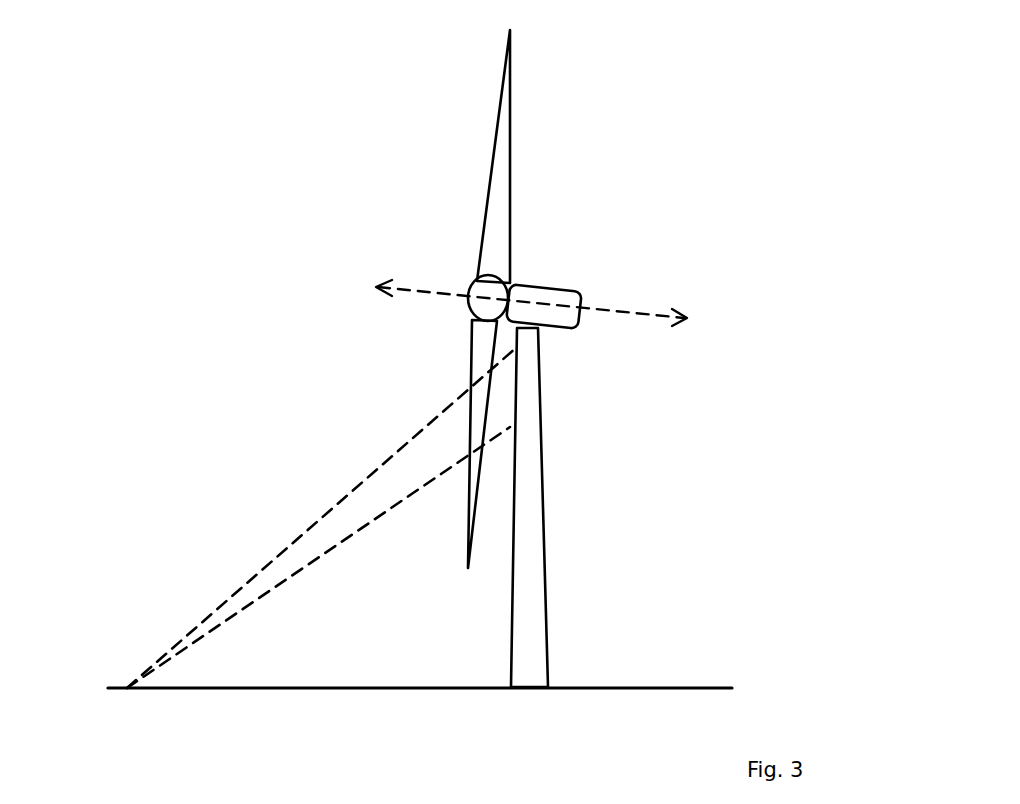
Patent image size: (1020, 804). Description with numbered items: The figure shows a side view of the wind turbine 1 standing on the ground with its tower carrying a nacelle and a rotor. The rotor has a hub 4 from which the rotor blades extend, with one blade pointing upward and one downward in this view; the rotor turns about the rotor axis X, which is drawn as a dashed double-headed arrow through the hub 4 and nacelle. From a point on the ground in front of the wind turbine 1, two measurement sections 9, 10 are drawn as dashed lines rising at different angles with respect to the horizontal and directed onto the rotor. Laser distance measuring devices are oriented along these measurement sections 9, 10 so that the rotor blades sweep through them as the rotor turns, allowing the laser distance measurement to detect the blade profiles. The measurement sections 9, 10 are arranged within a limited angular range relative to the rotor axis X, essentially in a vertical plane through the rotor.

The wind turbine 1 is at (575, 409).
The hub 4 is at (470, 315).
The measurement section 9 is at (273, 548).
The measurement section 10 is at (323, 547).
The rotor axis X is at (633, 310).